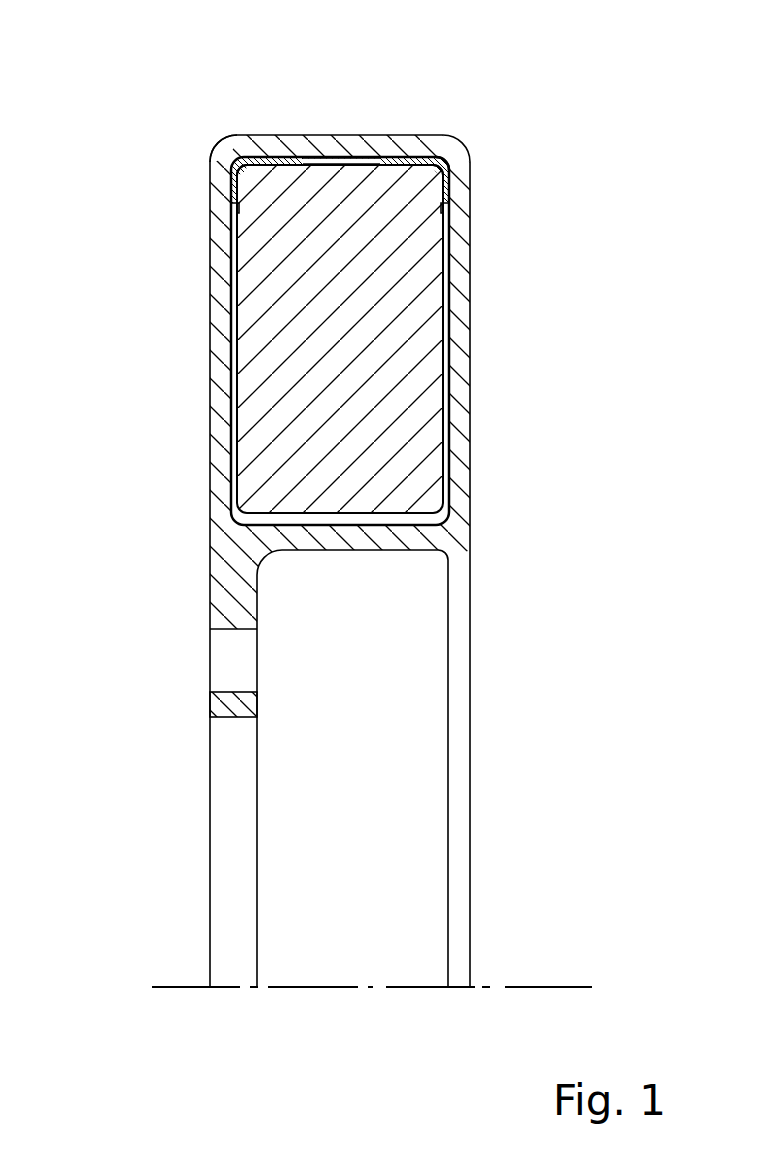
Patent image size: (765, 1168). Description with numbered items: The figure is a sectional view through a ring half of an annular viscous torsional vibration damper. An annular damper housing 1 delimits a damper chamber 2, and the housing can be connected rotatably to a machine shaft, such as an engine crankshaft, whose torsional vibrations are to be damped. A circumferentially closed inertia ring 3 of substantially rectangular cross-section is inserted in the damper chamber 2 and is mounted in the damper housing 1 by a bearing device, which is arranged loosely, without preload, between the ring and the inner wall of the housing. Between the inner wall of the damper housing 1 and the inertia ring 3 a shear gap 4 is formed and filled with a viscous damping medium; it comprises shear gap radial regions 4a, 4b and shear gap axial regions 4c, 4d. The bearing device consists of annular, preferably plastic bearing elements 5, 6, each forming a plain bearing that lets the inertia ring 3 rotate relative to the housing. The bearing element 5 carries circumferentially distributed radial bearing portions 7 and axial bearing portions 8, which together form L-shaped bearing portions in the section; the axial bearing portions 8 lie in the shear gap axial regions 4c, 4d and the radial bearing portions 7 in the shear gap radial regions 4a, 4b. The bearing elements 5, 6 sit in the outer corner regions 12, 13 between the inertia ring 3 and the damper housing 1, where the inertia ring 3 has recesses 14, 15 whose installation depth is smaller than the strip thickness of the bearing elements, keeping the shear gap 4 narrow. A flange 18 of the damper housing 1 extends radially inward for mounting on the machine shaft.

The damper housing 1 is at (462, 222).
The damper chamber 2 is at (458, 305).
The inertia ring 3 is at (433, 362).
The shear gap 4 is at (349, 155).
The shear gap radial region 4a is at (316, 157).
The shear gap radial region 4b is at (352, 516).
The shear gap axial region 4c is at (214, 441).
The shear gap axial region 4d is at (452, 437).
The bearing element 5 is at (238, 137).
The bearing element 6 is at (442, 160).
The radial bearing portion 7 is at (287, 160).
The axial bearing portion 8 is at (233, 190).
The outer corner region 12 is at (235, 354).
The outer corner region 13 is at (432, 182).
The recess 14 is at (248, 174).
The recess 15 is at (453, 207).
The flange 18 is at (223, 703).